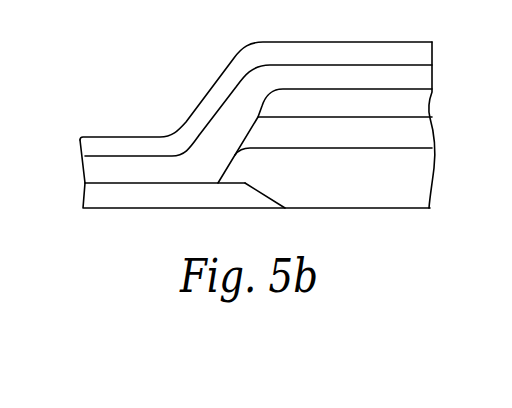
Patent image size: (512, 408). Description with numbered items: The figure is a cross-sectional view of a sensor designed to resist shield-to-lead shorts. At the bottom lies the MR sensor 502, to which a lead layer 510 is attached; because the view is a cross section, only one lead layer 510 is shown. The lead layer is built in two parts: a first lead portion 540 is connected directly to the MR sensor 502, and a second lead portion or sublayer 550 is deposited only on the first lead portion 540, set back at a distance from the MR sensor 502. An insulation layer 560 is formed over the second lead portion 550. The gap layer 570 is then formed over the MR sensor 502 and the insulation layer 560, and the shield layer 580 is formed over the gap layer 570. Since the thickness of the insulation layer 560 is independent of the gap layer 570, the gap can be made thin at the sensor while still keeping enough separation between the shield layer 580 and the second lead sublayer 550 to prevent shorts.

The MR sensor 502 is at (100, 203).
The lead layer 510 is at (375, 240).
The first lead portion 540 is at (433, 180).
The second lead portion 550 is at (427, 133).
The insulation layer 560 is at (430, 93).
The gap layer 570 is at (82, 173).
The shield layer 580 is at (217, 98).